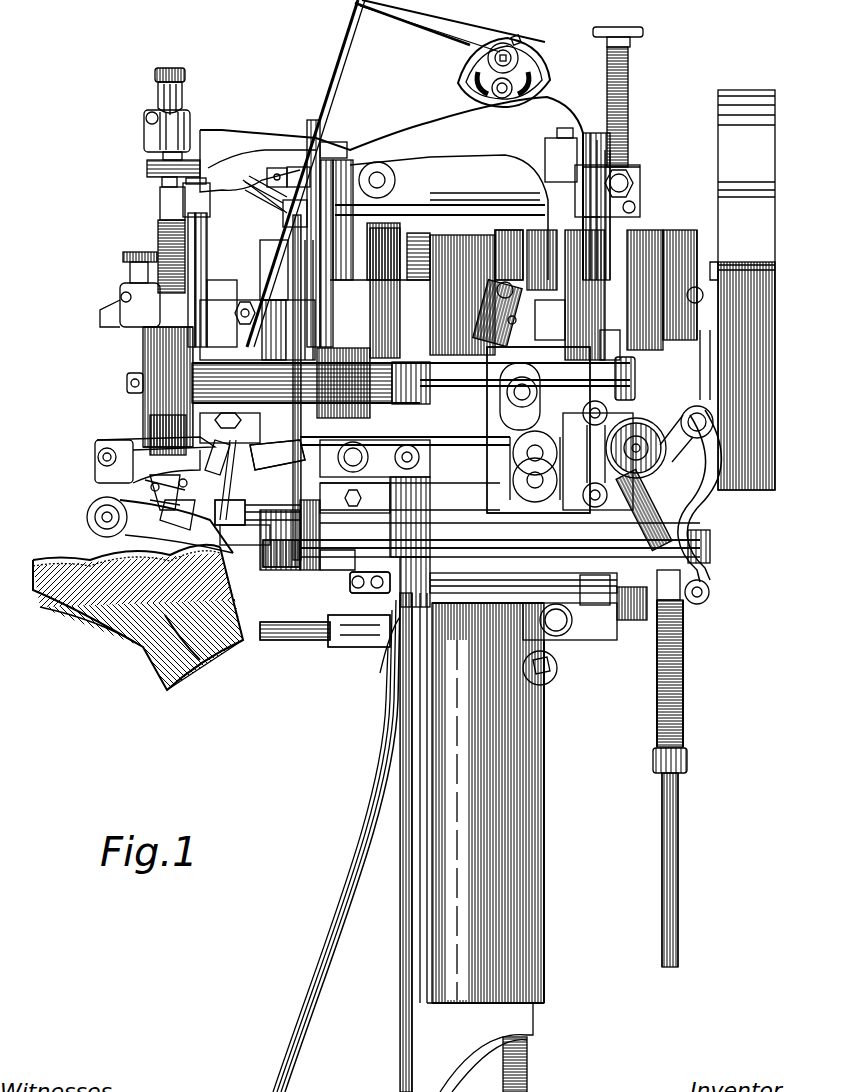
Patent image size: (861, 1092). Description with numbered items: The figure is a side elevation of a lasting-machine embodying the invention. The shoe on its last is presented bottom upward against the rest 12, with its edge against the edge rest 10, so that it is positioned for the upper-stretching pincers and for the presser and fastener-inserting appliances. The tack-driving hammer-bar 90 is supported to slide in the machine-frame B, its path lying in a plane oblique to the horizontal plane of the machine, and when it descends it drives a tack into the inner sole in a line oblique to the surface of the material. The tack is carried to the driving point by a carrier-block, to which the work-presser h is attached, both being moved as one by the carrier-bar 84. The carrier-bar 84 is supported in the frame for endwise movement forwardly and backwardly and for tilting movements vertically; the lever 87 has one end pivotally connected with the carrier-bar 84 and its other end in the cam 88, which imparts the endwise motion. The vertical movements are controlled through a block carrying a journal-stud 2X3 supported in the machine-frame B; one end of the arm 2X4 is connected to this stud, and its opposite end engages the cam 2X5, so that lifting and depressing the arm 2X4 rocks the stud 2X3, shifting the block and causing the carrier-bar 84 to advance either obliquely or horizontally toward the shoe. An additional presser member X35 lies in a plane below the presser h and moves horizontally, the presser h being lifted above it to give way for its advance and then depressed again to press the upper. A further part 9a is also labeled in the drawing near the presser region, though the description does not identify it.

The machine-frame B is at (267, 272).
The cam 88 is at (492, 245).
The tack-driving hammer-bar 90 is at (282, 442).
The work support 9a is at (215, 520).
The rest 12 is at (135, 562).
The edge rest 10 is at (227, 567).
The presser member X35 is at (257, 567).
The carrier-bar 84 is at (313, 570).
The arm 2X4 is at (372, 587).
The journal-stud 2X3 is at (338, 653).
The lever 87 is at (487, 437).
The cam 2X5 is at (500, 514).
The work-presser h is at (183, 617).